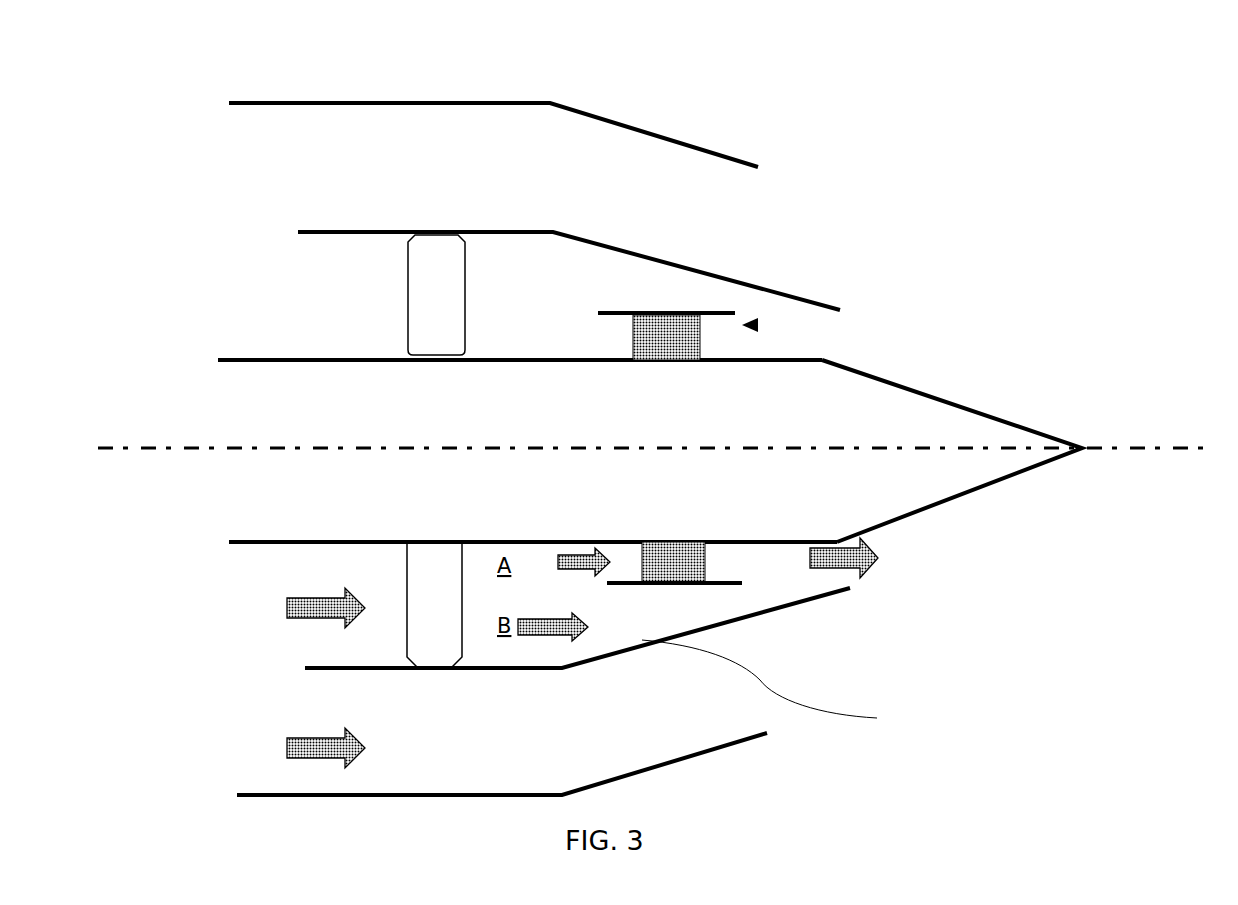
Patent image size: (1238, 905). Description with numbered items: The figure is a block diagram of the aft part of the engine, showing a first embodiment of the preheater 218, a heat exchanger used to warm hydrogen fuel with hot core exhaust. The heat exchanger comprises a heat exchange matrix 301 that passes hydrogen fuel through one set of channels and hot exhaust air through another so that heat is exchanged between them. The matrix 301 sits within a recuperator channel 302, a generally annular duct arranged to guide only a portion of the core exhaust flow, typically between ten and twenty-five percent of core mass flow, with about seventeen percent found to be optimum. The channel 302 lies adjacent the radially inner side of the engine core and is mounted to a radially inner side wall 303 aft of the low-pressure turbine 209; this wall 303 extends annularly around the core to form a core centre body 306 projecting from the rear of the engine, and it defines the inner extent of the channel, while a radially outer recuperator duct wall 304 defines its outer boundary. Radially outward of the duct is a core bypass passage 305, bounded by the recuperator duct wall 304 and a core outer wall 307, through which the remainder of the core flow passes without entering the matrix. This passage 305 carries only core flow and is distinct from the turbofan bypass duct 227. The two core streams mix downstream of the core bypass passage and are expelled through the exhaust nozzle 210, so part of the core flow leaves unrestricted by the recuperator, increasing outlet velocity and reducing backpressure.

The low-pressure turbine 209 is at (410, 295).
The exhaust nozzle 210 is at (875, 325).
The preheater 218 is at (757, 325).
The turbofan bypass duct 227 is at (379, 748).
The heat exchange matrix 301 is at (707, 558).
The recuperator channel 302 is at (843, 345).
The radially inner side wall 303 is at (528, 358).
The radially outer recuperator duct wall 304 is at (607, 308).
The core bypass passage 305 is at (700, 292).
The core centre body 306 is at (980, 408).
The core outer wall 307 is at (508, 230).